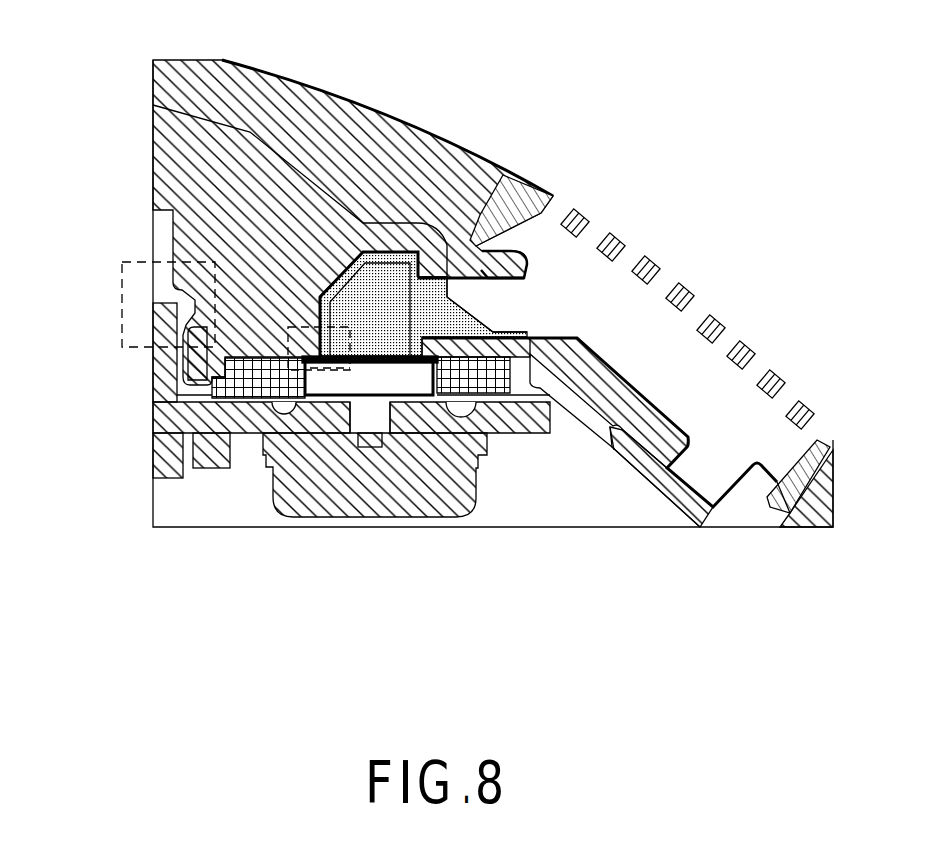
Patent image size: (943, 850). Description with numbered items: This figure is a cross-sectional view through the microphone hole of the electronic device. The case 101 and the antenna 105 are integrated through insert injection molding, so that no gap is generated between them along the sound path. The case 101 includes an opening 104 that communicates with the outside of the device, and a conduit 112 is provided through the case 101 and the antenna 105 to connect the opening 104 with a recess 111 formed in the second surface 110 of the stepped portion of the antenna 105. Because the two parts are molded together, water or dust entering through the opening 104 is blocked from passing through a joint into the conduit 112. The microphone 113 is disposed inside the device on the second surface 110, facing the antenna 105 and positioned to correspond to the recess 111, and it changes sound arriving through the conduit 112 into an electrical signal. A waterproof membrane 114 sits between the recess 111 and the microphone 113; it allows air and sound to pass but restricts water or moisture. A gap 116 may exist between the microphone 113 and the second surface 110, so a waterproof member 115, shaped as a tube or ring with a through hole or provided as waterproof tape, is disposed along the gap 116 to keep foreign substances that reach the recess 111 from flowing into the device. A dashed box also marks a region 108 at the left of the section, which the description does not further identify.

The case 101 is at (350, 128).
The antenna 105 is at (250, 187).
The conduit 112 is at (497, 300).
The opening 104 is at (672, 330).
The gap 116 is at (293, 325).
The clip 108 is at (122, 315).
The second surface 110 is at (268, 383).
The microphone 113 is at (413, 383).
The waterproof membrane 114 is at (330, 368).
The recess 111 is at (380, 330).
The waterproof member 115 is at (488, 382).